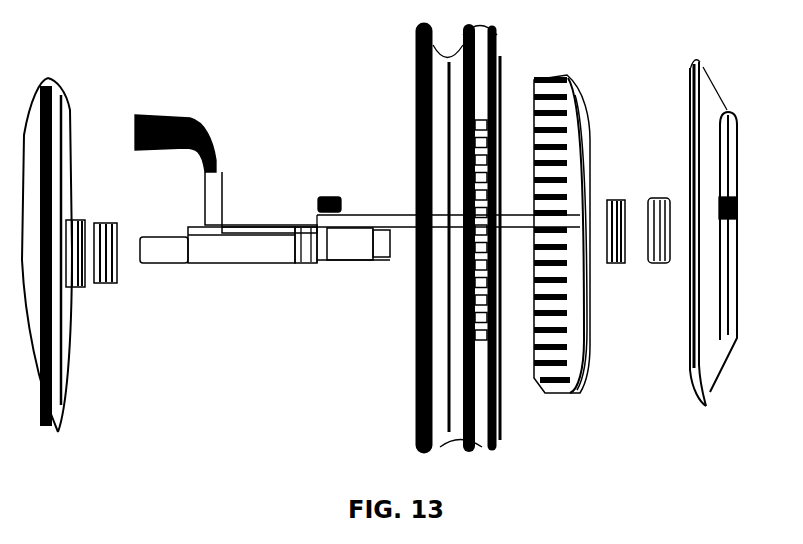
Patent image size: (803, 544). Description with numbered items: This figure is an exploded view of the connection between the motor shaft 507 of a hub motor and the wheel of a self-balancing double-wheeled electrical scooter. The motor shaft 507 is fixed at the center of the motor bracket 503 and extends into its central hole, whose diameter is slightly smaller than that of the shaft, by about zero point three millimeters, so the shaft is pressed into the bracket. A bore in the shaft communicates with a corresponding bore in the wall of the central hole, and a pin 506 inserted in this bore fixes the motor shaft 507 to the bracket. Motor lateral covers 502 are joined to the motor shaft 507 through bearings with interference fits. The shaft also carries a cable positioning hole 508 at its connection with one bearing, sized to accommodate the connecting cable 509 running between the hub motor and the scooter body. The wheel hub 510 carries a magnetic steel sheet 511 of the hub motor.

The motor lateral cover 502 is at (62, 105).
The motor bracket 503 is at (568, 83).
The pin 506 is at (332, 196).
The motor shaft 507 is at (188, 234).
The cable positioning hole 508 is at (319, 240).
The connecting cable 509 is at (227, 213).
The wheel hub 510 is at (438, 62).
The magnetic steel sheet 511 is at (483, 118).